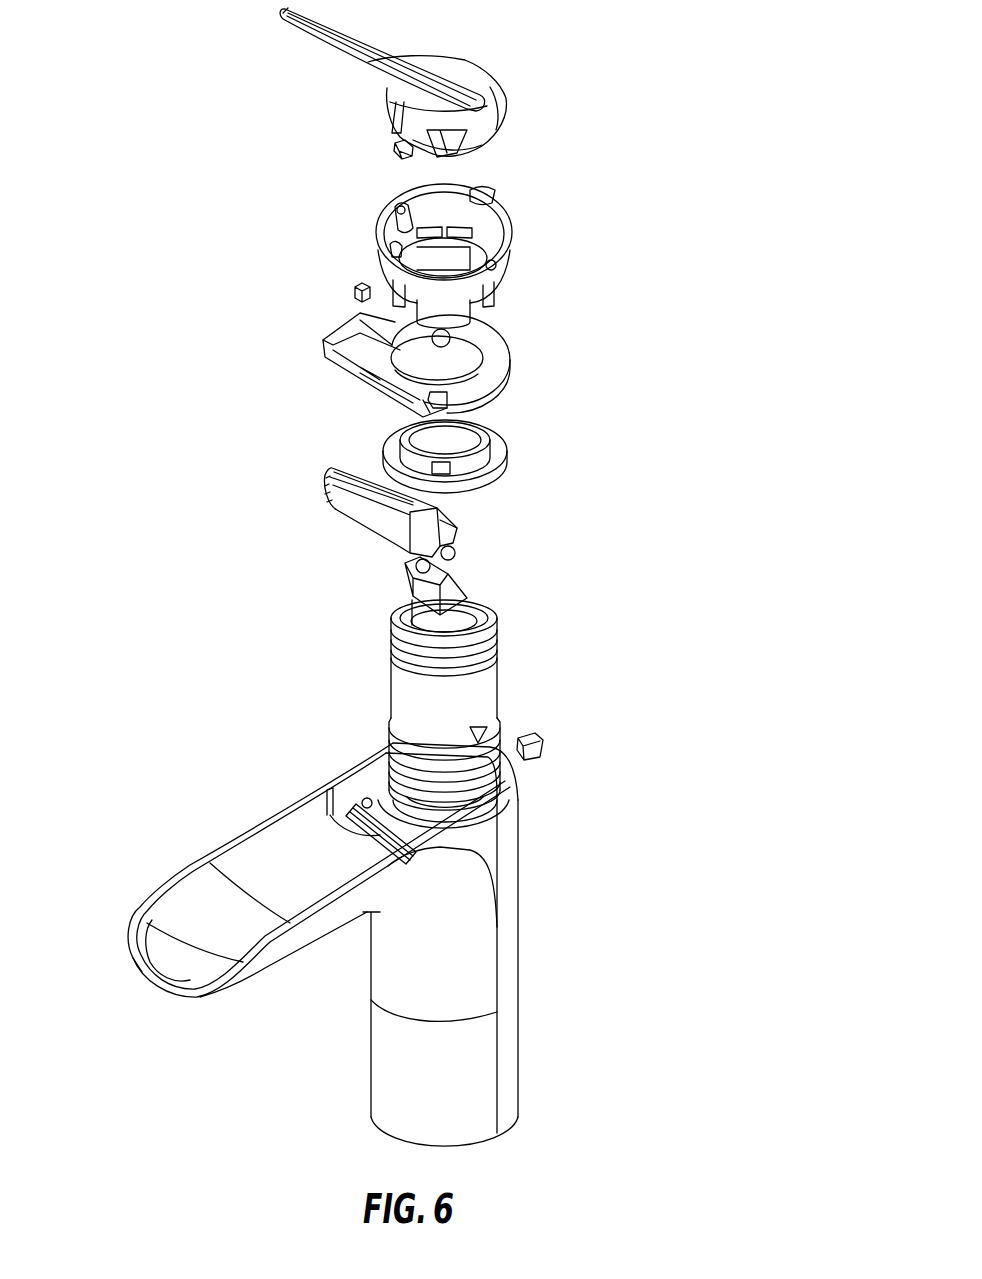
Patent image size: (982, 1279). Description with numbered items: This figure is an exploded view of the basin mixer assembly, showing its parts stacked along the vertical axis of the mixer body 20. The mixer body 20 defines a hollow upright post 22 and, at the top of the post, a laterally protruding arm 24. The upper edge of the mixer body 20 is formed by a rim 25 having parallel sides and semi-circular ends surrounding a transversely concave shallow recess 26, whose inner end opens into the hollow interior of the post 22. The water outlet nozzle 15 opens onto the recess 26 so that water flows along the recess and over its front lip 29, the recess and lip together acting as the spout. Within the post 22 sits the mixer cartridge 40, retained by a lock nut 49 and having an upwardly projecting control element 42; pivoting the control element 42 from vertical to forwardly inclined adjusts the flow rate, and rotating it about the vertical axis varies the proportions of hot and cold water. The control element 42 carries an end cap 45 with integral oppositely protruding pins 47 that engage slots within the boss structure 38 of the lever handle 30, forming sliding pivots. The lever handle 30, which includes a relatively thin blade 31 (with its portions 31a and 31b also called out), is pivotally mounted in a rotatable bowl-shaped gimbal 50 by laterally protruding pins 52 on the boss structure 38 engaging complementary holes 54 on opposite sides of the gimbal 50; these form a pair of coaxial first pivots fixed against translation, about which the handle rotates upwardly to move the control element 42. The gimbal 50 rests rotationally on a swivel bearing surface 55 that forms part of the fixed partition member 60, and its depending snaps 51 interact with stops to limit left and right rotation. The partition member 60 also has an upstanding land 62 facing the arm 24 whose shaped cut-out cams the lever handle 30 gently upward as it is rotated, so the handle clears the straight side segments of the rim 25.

The water outlet nozzle 15 is at (367, 520).
The mixer body 20 is at (367, 944).
The hollow upright post 22 is at (510, 1063).
The arm 24 is at (310, 909).
The rim 25 is at (233, 835).
The recess 26 is at (202, 900).
The front lip 29 is at (145, 980).
The lever handle 30 is at (434, 84).
The blade 31 is at (360, 48).
The cap surface 31a is at (506, 93).
The lever end 31b is at (342, 55).
The boss structure 38 is at (490, 137).
The mixer cartridge 40 is at (497, 613).
The control element 42 is at (410, 589).
The end cap 45 is at (440, 525).
The pins 47 is at (457, 550).
The lock nut 49 is at (507, 447).
The gimbal 50 is at (487, 256).
The snaps 51 is at (497, 294).
The pins 52 is at (393, 148).
The holes 54 is at (497, 263).
The swivel bearing surface 55 is at (512, 343).
The partition member 60 is at (432, 365).
The land 62 is at (322, 338).